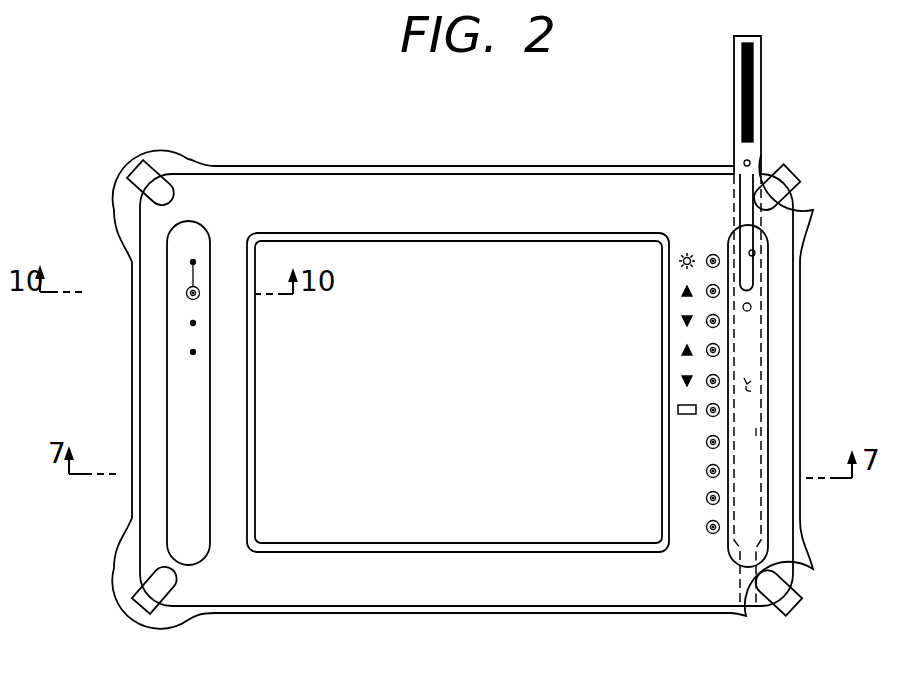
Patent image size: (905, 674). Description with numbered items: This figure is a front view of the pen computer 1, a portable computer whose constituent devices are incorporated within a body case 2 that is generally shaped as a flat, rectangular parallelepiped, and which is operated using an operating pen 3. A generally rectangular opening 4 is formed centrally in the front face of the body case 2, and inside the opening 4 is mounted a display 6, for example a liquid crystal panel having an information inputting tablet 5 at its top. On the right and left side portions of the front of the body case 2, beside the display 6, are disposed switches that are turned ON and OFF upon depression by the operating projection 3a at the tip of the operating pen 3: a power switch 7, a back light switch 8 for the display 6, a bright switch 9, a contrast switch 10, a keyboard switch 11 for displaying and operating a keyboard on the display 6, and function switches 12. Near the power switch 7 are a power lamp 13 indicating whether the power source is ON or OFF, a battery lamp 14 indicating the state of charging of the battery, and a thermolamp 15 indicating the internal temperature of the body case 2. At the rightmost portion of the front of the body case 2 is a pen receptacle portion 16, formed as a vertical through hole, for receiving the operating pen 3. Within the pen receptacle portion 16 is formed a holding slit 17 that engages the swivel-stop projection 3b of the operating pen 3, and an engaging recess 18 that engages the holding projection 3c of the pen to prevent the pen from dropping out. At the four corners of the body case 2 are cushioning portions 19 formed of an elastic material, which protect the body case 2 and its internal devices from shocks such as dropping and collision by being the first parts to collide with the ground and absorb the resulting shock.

The pen computer 1 is at (493, 156).
The body case 2 is at (440, 190).
The operating pen 3 is at (762, 45).
The operating projection 3a is at (755, 380).
The swivel-stop projection 3b is at (754, 78).
The holding projection 3c is at (751, 160).
The opening 4 is at (520, 250).
The tablet 5 is at (394, 258).
The display 6 is at (474, 409).
The power switch 7 is at (186, 292).
The back light switch 8 is at (711, 255).
The bright switch 9 is at (707, 322).
The contrast switch 10 is at (707, 350).
The keyboard switch 11 is at (707, 410).
The function switches 12 is at (707, 444).
The power lamp 13 is at (194, 261).
The battery lamp 14 is at (190, 323).
The thermolamp 15 is at (190, 352).
The pen receptacle portion 16 is at (760, 430).
The holding slit 17 is at (756, 253).
The engaging recess 18 is at (752, 307).
The cushioning portions 19 is at (167, 162).